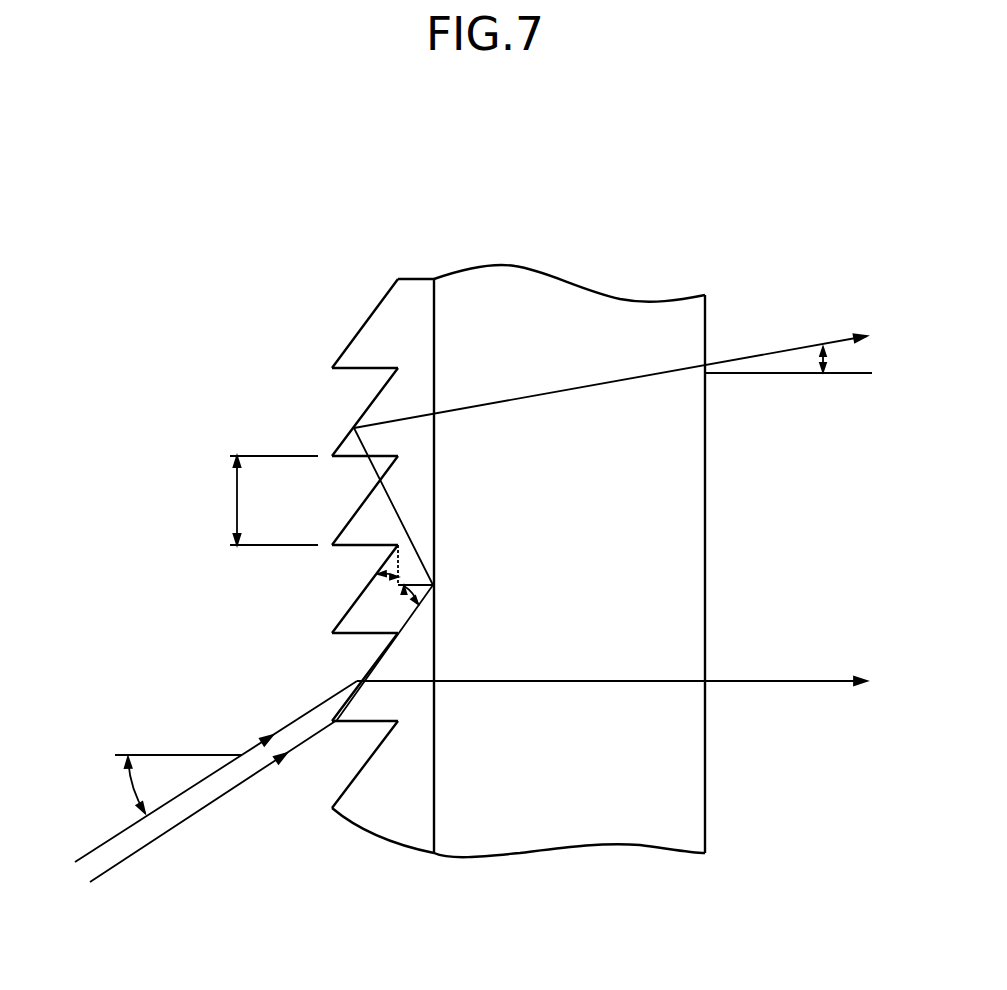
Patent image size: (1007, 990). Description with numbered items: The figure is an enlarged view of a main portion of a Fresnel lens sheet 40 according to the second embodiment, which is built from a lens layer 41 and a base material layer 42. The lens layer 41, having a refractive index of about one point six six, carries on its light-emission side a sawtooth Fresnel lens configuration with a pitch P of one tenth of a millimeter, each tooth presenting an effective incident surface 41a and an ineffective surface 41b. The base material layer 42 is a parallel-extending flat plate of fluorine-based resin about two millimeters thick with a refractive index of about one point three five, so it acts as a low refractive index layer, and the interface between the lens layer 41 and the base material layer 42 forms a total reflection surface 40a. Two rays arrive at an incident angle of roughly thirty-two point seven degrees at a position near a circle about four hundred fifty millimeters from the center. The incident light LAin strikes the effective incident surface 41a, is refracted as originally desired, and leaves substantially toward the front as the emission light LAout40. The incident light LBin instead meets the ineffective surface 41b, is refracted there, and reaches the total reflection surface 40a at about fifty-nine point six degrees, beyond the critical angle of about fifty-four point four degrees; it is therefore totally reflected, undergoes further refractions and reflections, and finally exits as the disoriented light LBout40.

The Fresnel lens sheet 40 is at (539, 168).
The total reflection surface 40a is at (433, 325).
The lens layer 41 is at (415, 292).
The incident surface 41a is at (352, 340).
The ineffective surface 41b is at (358, 369).
The base material layer 42 is at (594, 306).
The pitch P is at (235, 502).
The incident light LAin is at (98, 849).
The incident light LBin is at (118, 870).
The emission light LAout40 is at (787, 683).
The disoriented light LBout40 is at (783, 353).